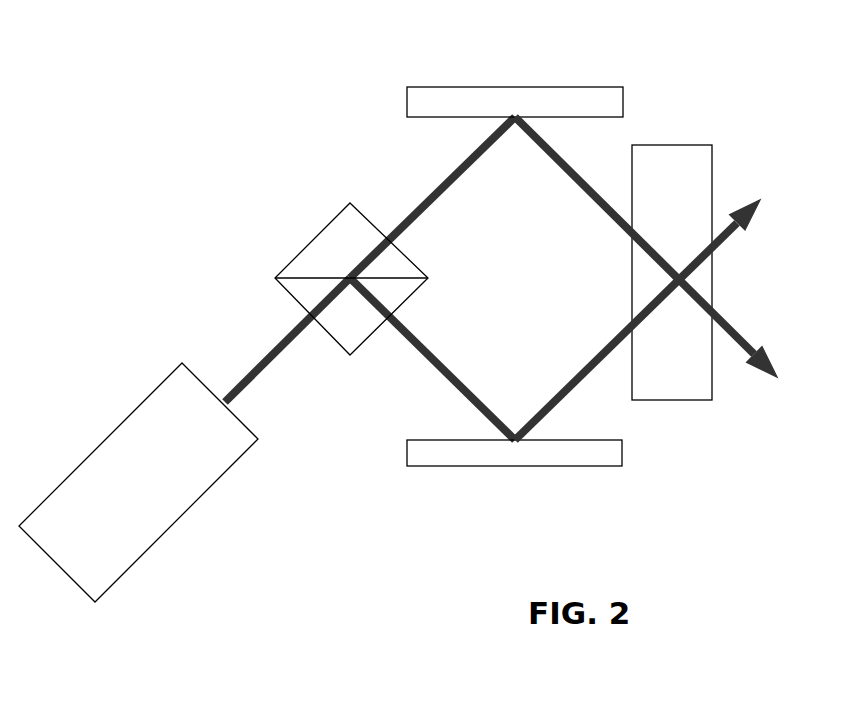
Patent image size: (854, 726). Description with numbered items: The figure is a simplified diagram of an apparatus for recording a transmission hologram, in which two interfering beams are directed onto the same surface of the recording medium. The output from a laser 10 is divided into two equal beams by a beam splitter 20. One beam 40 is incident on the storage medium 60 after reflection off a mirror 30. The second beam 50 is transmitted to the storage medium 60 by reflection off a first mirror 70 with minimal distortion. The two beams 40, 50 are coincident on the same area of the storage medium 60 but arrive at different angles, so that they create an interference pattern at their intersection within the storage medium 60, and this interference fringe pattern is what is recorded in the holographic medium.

The laser 10 is at (104, 442).
The beam splitter 20 is at (316, 238).
The mirror 30 is at (515, 86).
The beam 40 is at (590, 194).
The second beam 50 is at (588, 359).
The storage medium 60 is at (667, 144).
The first mirror 70 is at (622, 452).